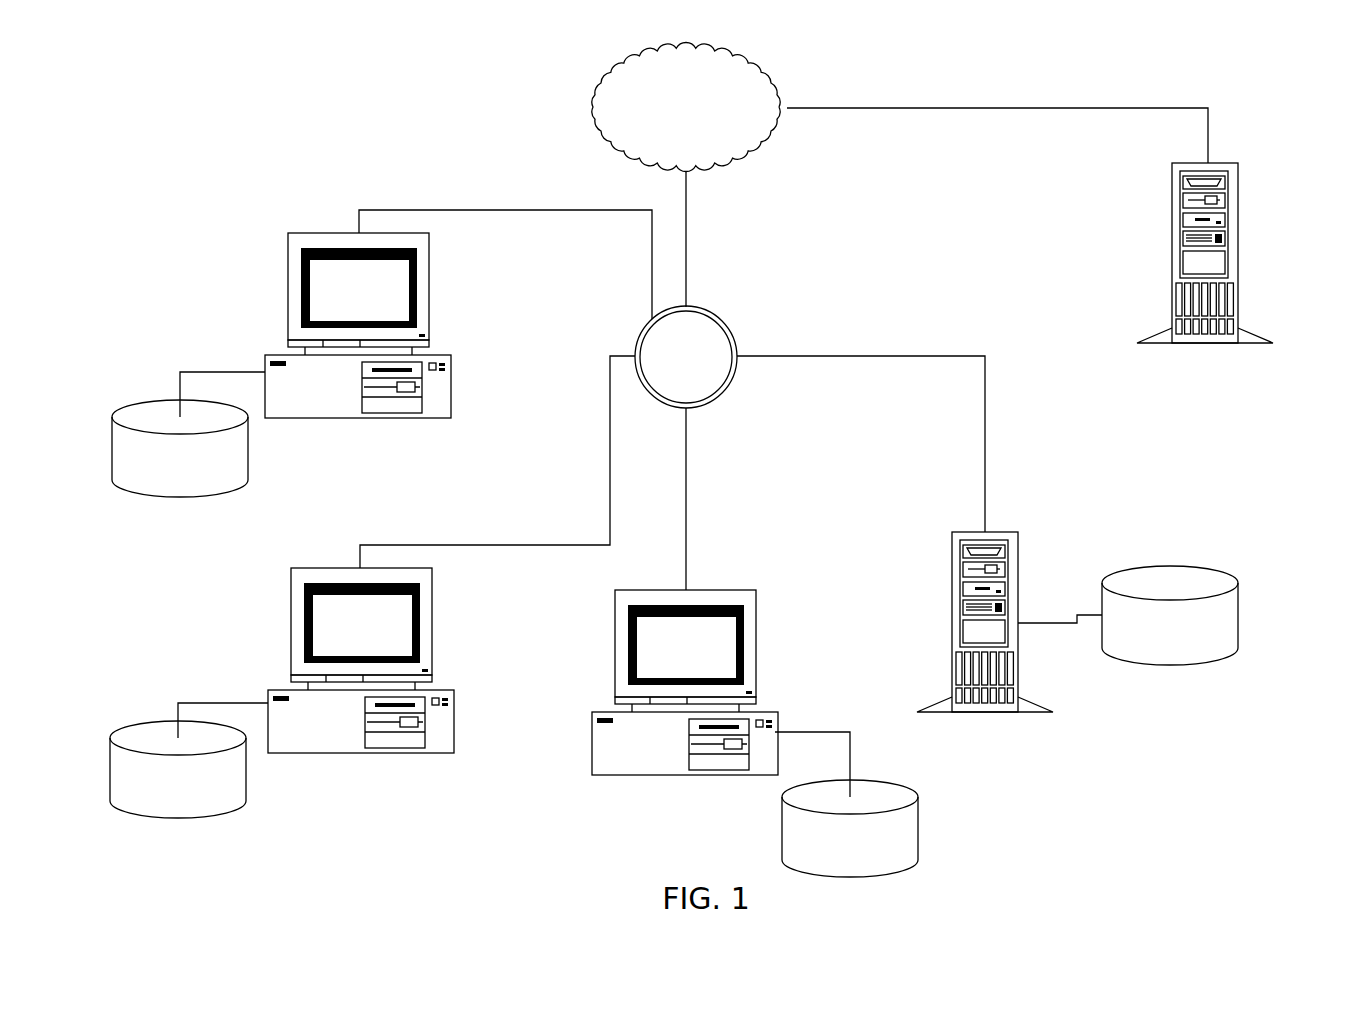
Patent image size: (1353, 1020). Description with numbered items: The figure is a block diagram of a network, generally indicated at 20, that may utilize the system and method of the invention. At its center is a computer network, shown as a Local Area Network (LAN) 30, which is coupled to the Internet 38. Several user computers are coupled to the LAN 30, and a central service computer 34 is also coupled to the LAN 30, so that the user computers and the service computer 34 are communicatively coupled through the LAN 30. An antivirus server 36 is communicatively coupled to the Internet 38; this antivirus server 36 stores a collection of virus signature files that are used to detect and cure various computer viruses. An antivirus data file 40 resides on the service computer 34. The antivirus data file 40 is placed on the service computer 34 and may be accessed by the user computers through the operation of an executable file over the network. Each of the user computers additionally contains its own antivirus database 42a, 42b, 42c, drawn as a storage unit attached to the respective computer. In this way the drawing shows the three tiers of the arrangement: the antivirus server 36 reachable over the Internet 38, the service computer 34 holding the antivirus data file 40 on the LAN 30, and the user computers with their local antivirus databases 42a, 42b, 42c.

The network 20 is at (238, 92).
The computer network 30 is at (723, 323).
The central service computer 34 is at (1020, 545).
The antivirus server 36 is at (1240, 197).
The Internet 38 is at (783, 89).
The antivirus data file 40 is at (1240, 615).
The antivirus database 42a is at (918, 827).
The antivirus database 42b is at (180, 820).
The antivirus database 42c is at (181, 498).